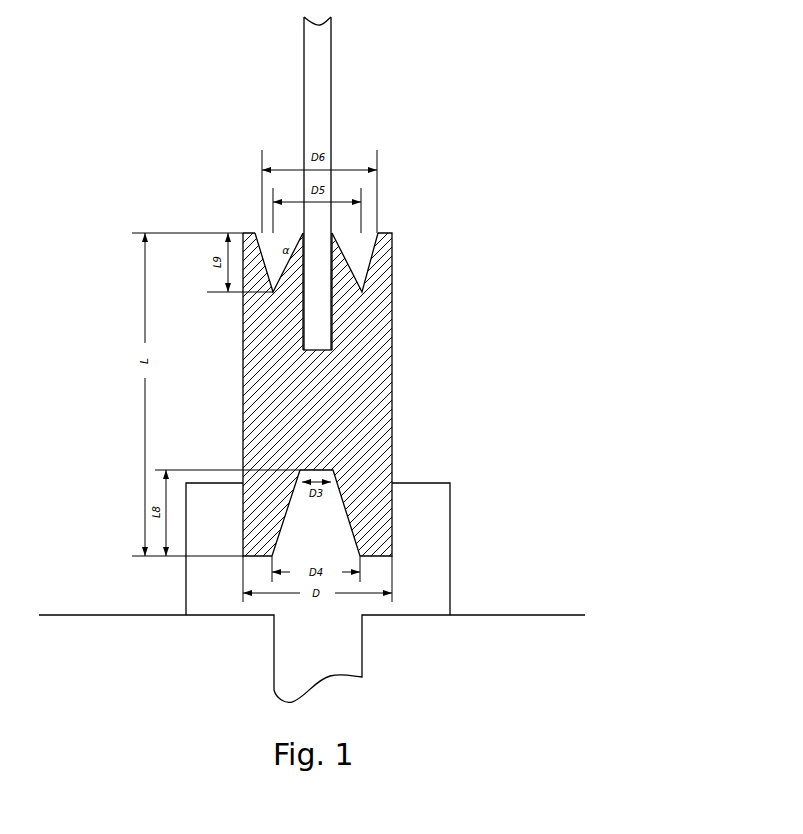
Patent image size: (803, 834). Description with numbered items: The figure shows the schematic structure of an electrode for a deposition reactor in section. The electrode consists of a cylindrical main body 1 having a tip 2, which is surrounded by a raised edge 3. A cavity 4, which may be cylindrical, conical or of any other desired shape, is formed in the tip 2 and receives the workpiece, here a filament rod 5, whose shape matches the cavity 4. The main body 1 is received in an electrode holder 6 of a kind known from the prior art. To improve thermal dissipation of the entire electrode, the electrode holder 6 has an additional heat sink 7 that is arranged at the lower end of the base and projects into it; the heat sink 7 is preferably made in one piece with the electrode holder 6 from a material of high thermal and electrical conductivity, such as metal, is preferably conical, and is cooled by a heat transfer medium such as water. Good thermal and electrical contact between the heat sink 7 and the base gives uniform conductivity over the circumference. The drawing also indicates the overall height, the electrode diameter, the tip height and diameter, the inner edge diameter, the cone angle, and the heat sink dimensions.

The cylindrical main body 1 is at (392, 410).
The tip 2 is at (338, 248).
The raised edge 3 is at (392, 265).
The cavity 4 is at (313, 327).
The filament rod 5 is at (333, 115).
The electrode holder 6 is at (450, 578).
The heat sink 7 is at (323, 528).